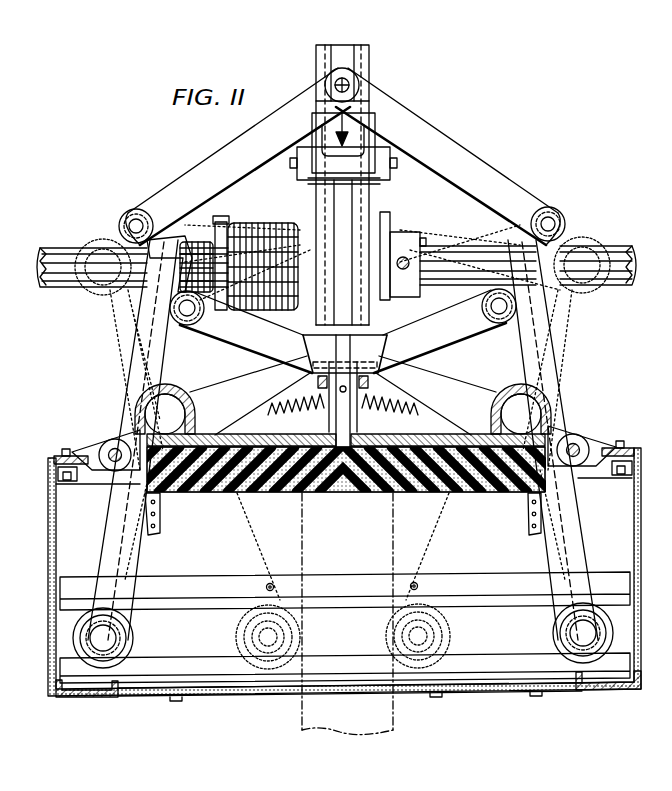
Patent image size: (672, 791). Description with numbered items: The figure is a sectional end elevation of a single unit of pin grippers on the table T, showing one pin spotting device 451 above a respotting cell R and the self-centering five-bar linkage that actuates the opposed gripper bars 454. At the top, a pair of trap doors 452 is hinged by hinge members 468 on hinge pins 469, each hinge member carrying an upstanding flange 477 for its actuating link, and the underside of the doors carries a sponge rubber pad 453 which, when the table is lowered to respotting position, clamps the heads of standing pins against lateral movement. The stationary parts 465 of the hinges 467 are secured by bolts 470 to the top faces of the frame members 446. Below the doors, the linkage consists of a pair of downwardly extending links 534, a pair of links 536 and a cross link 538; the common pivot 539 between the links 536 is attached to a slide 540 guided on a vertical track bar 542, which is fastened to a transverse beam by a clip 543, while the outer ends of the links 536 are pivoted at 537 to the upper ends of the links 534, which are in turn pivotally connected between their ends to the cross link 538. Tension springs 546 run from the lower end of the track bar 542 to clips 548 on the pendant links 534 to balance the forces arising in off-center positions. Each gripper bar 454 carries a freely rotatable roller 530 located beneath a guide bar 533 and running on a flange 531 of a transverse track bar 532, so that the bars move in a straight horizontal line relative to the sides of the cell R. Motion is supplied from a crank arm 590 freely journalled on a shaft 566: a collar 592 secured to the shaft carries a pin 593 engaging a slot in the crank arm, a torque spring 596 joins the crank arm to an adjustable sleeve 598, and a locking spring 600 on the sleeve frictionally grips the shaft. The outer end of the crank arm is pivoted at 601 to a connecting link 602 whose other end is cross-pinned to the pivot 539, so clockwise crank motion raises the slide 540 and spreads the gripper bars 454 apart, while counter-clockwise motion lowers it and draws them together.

The vertical track bar 542 is at (318, 57).
The slide 540 is at (348, 72).
The common pivot 539 is at (330, 92).
The connecting link 602 is at (376, 136).
The pivot 601 is at (291, 165).
The links 536 is at (205, 155).
The pin spotting device 451 is at (497, 157).
The pivots 537 is at (126, 218).
The shaft 566 is at (67, 266).
The crank arm 590 is at (302, 198).
The adjustable sleeve 598 is at (228, 220).
The locking spring 600 is at (200, 224).
The collar 592 is at (403, 232).
The pin 593 is at (428, 240).
The downwardly extending links 534 is at (138, 346).
The cross link 538 is at (434, 305).
The torque spring 596 is at (250, 320).
The clip 543 is at (318, 378).
The tension springs 546 is at (260, 360).
The upstanding flange 477 is at (212, 398).
The trap doors 452 is at (266, 428).
The hinge member 468 is at (142, 404).
The sponge rubber pad 453 is at (398, 493).
The point P is at (404, 497).
The hinge pin 469 is at (111, 449).
The hinges 467 is at (76, 452).
The stationary parts 465 is at (54, 460).
The table T is at (56, 481).
The bolts 470 is at (70, 484).
The frame members 446 is at (52, 618).
The clips 548 is at (158, 512).
The respotting cell R is at (539, 550).
The guide bar 533 is at (190, 598).
The flange 531 is at (362, 666).
The gripper bars 454 is at (84, 648).
The roller 530 is at (180, 640).
The track bar 532 is at (126, 699).